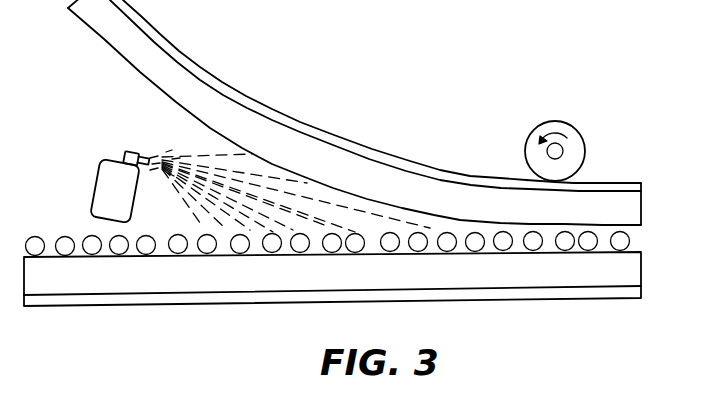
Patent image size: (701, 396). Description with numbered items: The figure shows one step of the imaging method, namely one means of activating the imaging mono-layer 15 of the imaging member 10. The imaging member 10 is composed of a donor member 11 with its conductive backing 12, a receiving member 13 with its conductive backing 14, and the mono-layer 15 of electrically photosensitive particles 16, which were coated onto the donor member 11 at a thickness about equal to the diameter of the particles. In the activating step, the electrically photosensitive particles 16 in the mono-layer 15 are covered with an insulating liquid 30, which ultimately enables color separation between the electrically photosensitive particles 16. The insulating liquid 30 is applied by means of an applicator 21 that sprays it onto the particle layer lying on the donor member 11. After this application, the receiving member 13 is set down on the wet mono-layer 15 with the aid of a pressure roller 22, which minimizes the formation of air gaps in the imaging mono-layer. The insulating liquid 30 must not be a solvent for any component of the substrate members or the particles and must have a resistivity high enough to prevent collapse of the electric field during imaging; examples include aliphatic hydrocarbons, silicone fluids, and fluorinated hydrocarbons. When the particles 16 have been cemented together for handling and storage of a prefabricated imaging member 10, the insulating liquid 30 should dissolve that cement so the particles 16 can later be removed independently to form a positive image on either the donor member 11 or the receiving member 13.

The imaging member 10 is at (606, 168).
The donor member 11 is at (641, 276).
The conductive backing 12 is at (641, 293).
The receiving member 13 is at (637, 211).
The conductive backing 14 is at (641, 183).
The mono-layer 15 is at (631, 240).
The electrically photosensitive particles 16 is at (332, 255).
The applicator 21 is at (93, 182).
The pressure roller 22 is at (553, 120).
The insulating liquid 30 is at (180, 156).